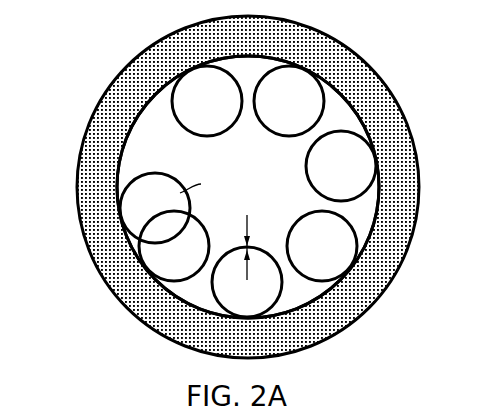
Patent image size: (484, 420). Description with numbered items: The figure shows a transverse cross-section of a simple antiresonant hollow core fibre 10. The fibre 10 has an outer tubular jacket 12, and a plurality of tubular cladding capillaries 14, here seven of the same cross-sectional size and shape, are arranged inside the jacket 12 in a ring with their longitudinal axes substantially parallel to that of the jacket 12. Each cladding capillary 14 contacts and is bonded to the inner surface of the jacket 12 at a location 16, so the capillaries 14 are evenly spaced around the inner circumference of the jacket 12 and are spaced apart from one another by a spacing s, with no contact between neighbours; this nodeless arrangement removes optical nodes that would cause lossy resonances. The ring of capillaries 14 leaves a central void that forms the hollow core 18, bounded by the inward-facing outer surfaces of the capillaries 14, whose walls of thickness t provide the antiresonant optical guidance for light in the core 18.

The fibre 10 is at (102, 58).
The outer tubular jacket 12 is at (98, 272).
The cladding capillaries 14 is at (324, 102).
The location 16 is at (333, 270).
The hollow core 18 is at (262, 192).